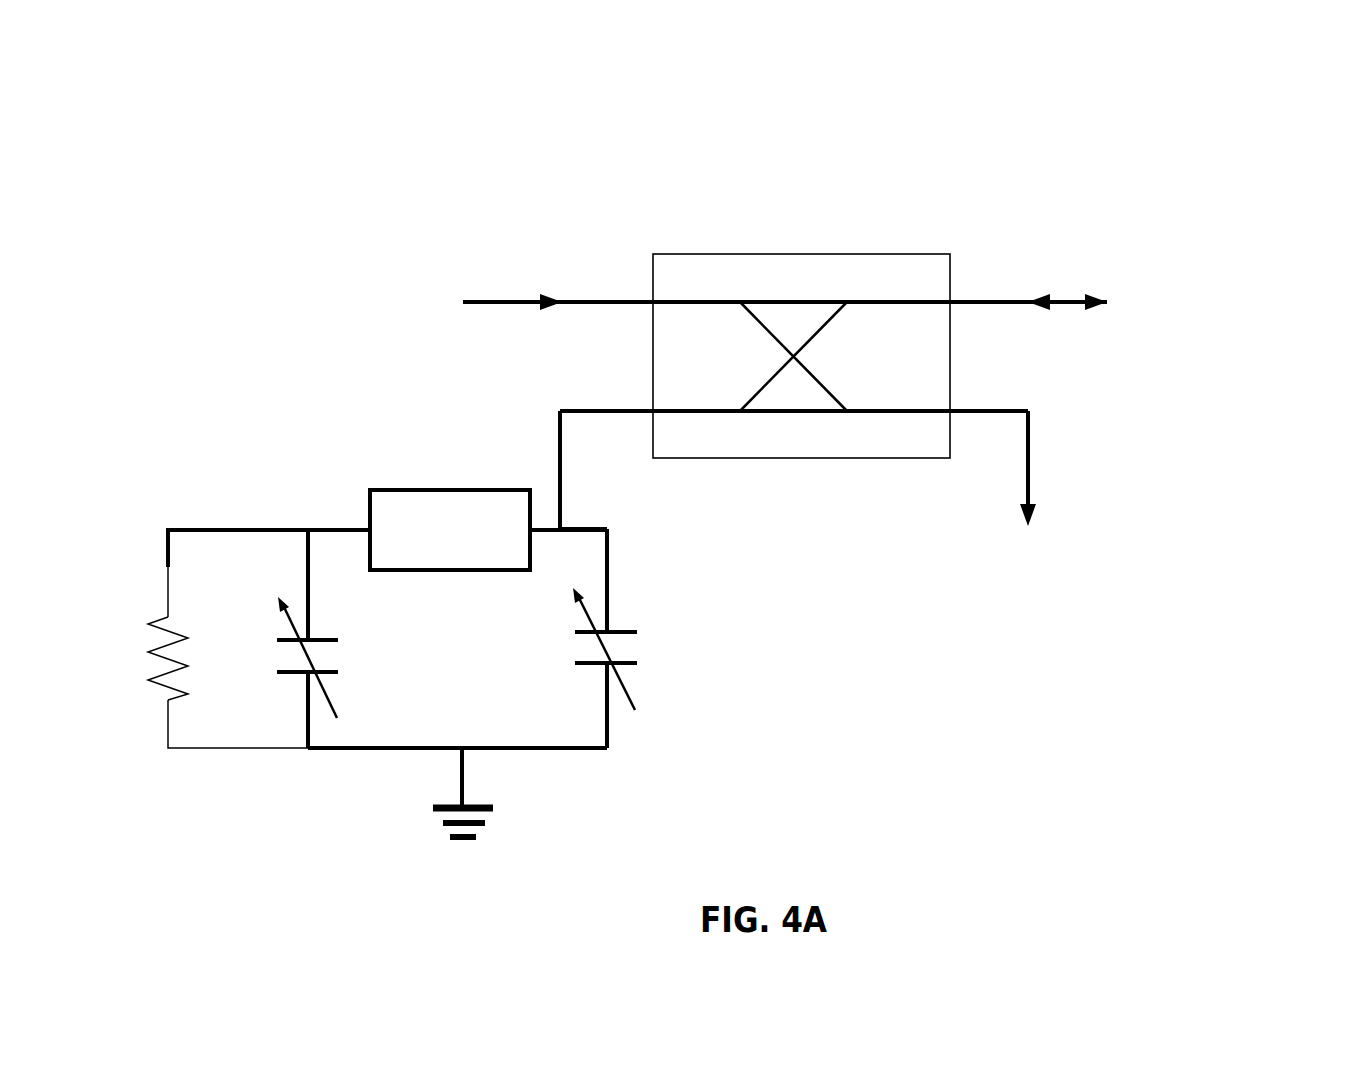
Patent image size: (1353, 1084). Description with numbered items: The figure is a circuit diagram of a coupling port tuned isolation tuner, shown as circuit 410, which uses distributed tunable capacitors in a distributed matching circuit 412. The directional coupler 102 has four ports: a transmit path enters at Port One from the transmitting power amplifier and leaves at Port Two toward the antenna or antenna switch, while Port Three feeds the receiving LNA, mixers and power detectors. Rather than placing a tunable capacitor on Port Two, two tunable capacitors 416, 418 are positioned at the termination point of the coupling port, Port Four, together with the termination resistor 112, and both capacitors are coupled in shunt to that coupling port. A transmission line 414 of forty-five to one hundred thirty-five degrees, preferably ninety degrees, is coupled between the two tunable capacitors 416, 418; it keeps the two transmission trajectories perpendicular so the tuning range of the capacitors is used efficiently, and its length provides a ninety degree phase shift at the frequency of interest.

The circuit 410 is at (157, 181).
The directional coupler 102 is at (715, 228).
The distributed matching circuit 412 is at (132, 473).
The termination resistor 112 is at (125, 657).
The transmission line 414 is at (456, 476).
The tunable capacitor 416 is at (277, 702).
The tunable capacitor 418 is at (591, 704).